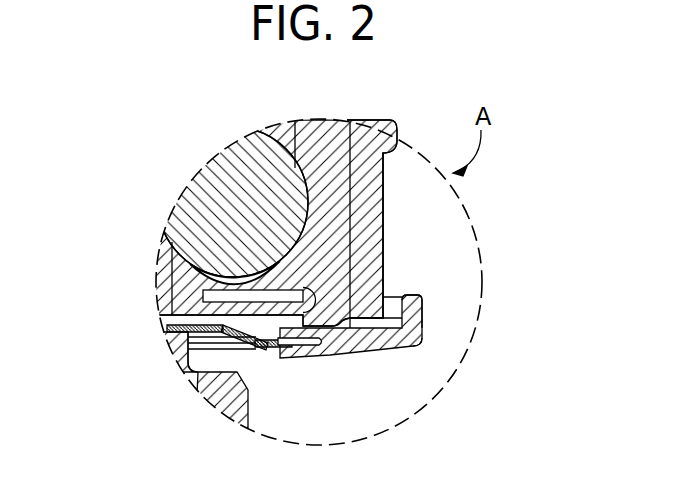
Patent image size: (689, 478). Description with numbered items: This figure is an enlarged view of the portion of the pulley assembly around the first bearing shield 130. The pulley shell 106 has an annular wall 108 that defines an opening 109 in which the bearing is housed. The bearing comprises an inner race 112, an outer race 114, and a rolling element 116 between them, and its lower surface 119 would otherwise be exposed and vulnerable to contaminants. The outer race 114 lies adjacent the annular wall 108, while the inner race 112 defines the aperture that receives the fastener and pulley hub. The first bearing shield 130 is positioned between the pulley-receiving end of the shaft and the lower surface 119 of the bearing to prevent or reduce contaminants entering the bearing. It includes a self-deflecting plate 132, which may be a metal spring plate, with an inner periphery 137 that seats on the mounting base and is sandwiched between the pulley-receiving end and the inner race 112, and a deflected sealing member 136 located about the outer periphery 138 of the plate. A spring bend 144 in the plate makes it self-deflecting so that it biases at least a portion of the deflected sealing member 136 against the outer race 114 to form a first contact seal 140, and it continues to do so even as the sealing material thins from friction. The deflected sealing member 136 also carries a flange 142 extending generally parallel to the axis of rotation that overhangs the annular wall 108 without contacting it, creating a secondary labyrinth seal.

The pulley shell 106 is at (376, 122).
The annular wall 108 is at (368, 263).
The opening 109 is at (351, 195).
The inner race 112 is at (158, 283).
The outer race 114 is at (322, 135).
The rolling element 116 is at (210, 160).
The lower surface 119 is at (162, 321).
The first bearing shield 130 is at (428, 322).
The self-deflecting plate 132 is at (253, 335).
The deflected sealing member 136 is at (413, 346).
The inner periphery 137 is at (165, 328).
The outer periphery 138 is at (292, 355).
The first contact seal 140 is at (328, 333).
The flange 142 is at (420, 312).
The spring bend 144 is at (188, 358).